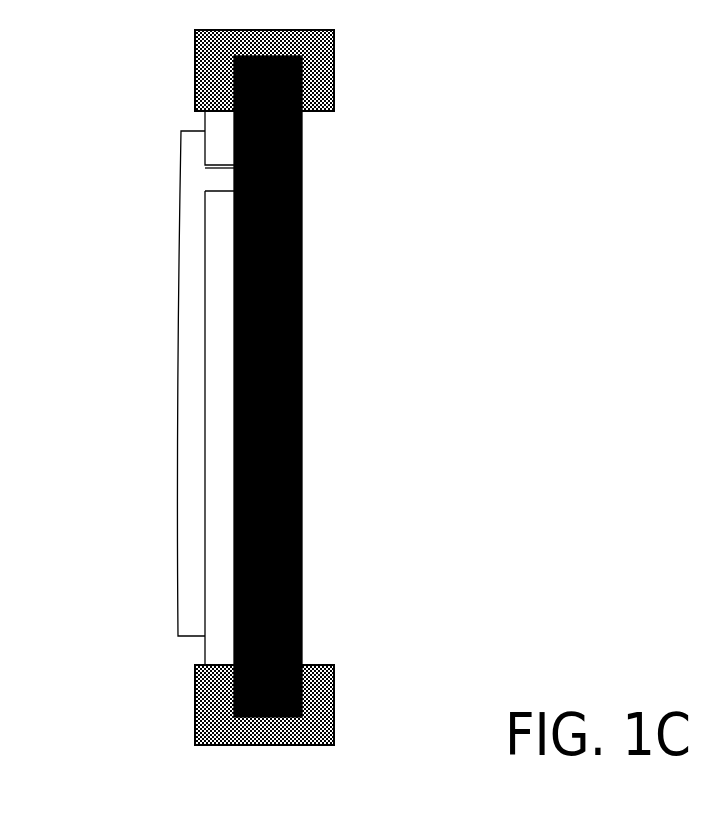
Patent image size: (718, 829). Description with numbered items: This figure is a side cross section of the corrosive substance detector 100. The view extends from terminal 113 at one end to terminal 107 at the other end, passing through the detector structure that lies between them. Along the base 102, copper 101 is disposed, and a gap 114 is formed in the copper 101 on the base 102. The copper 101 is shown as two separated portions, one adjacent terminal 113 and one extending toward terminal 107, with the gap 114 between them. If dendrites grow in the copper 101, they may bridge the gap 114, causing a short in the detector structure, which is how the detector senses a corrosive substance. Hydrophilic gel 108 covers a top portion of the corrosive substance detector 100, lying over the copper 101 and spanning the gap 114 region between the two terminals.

The corrosive substance detector 100 is at (445, 219).
The copper 101 is at (207, 122).
The base 102 is at (294, 445).
The terminal 107 is at (200, 717).
The hydrophilic gel 108 is at (180, 463).
The terminal 113 is at (317, 47).
The gap 114 is at (212, 168).